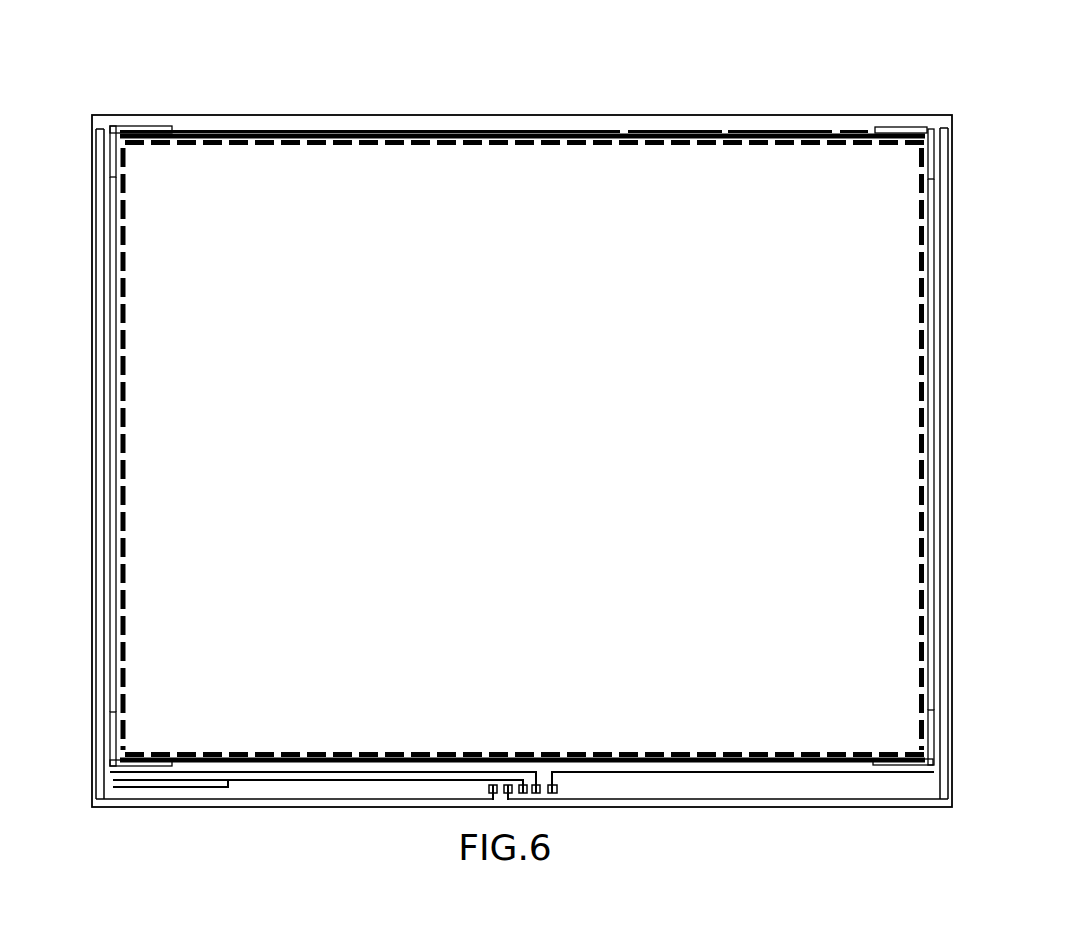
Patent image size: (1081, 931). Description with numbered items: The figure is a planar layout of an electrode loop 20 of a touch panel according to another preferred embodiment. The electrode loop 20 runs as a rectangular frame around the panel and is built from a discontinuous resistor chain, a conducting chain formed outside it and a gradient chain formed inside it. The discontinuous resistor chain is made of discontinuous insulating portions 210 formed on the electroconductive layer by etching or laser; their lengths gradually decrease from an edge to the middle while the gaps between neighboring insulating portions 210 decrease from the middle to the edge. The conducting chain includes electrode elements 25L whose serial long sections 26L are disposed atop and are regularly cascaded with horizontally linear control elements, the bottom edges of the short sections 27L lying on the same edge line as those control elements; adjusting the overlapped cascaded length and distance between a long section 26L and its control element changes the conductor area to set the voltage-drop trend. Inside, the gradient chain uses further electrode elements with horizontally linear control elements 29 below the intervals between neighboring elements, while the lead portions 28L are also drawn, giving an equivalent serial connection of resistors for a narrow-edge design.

The electrode loop 20 is at (938, 267).
The insulating portion 210 is at (599, 138).
The electrode element 25L is at (622, 133).
The long section 26L is at (563, 133).
The short section 27L is at (672, 132).
The fourth lead line 28L is at (642, 133).
The horizontally linear control element 29 is at (813, 135).